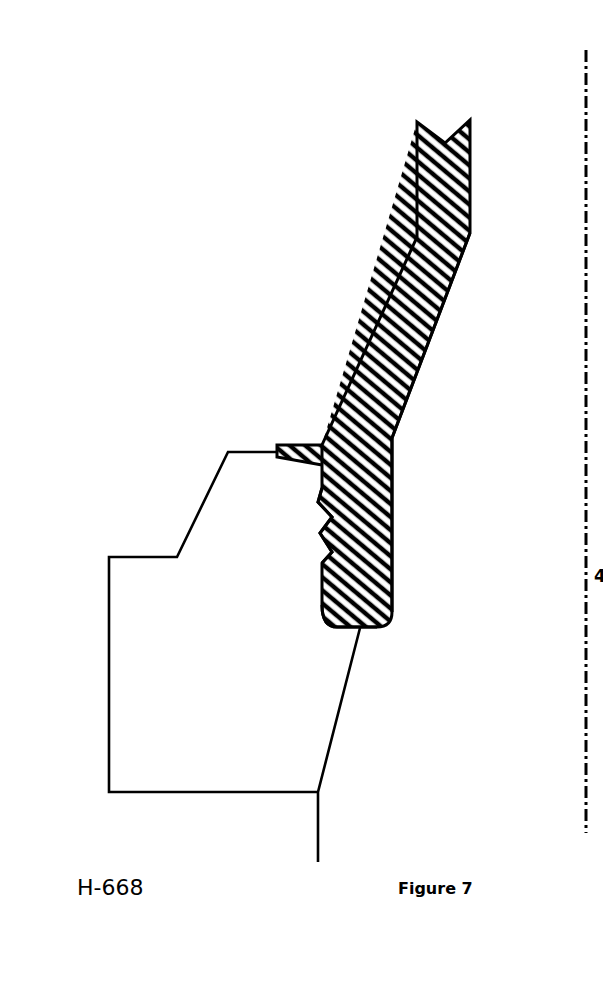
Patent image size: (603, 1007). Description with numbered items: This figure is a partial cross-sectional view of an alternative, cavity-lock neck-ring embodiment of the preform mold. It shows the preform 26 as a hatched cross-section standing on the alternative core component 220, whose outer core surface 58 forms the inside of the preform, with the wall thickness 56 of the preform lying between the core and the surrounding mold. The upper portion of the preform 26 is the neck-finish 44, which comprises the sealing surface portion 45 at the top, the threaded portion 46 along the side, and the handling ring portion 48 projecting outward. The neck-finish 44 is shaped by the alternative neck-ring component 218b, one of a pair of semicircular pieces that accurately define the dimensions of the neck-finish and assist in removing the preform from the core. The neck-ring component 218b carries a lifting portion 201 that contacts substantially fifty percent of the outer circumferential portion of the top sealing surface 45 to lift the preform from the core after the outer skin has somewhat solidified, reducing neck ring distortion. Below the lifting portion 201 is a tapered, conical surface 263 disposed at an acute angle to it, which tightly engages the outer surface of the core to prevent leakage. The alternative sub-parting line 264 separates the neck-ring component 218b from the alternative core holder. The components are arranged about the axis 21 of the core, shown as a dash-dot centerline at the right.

The preform 26 is at (373, 330).
The handling ring portion 48 is at (293, 445).
The core surface 58 is at (428, 345).
The wall thickness 56 is at (372, 510).
The threaded portion 46 is at (318, 503).
The sealing surface portion 45 is at (362, 628).
The lifting portion 201 is at (347, 628).
The alternative neck-ring component 218b is at (155, 568).
The neck-finish 44 is at (287, 627).
The tapered, conical surface 263 is at (340, 707).
The alternative sub-parting line 264 is at (330, 737).
The alternative core component 220 is at (438, 802).
The axis 21 is at (586, 815).